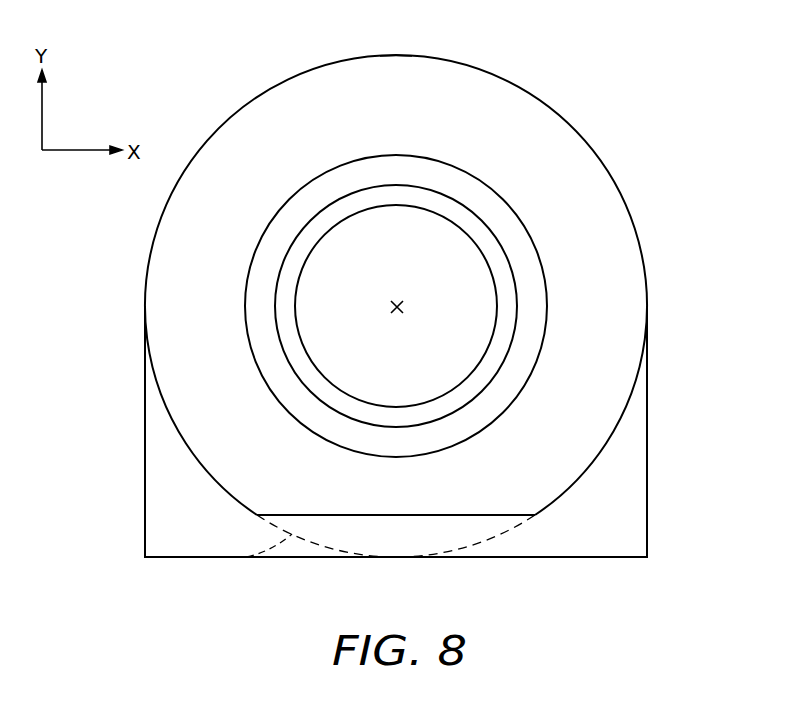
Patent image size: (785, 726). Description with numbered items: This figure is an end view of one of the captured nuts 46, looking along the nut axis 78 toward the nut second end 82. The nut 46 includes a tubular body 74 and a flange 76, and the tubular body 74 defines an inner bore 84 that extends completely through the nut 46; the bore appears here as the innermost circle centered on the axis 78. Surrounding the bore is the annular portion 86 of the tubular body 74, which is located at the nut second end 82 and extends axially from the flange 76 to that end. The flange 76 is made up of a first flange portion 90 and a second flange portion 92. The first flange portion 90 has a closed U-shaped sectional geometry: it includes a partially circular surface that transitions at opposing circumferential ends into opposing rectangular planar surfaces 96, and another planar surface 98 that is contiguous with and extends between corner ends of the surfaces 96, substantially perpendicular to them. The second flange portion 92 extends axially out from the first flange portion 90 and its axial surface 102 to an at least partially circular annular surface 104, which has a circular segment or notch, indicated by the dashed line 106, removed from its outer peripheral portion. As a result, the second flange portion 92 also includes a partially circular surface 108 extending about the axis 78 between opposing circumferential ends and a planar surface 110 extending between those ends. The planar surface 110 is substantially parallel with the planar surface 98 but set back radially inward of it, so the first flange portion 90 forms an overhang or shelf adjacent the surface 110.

The nut 46 is at (642, 116).
The tubular body 74 is at (480, 306).
The annular portion 86 is at (544, 233).
The flange 76 is at (652, 322).
The nut axis 78 is at (403, 307).
The nut second end 82 is at (437, 205).
The inner bore 84 is at (360, 307).
The first flange portion 90 is at (653, 475).
The second flange portion 92 is at (641, 396).
The planar surfaces 96 is at (647, 527).
The planar surface 98 is at (358, 558).
The axial surface 102 is at (187, 523).
The annular surface 104 is at (525, 128).
The dashed line 106 is at (244, 557).
The partially circular surface 108 is at (390, 54).
The planar surface 110 is at (432, 516).